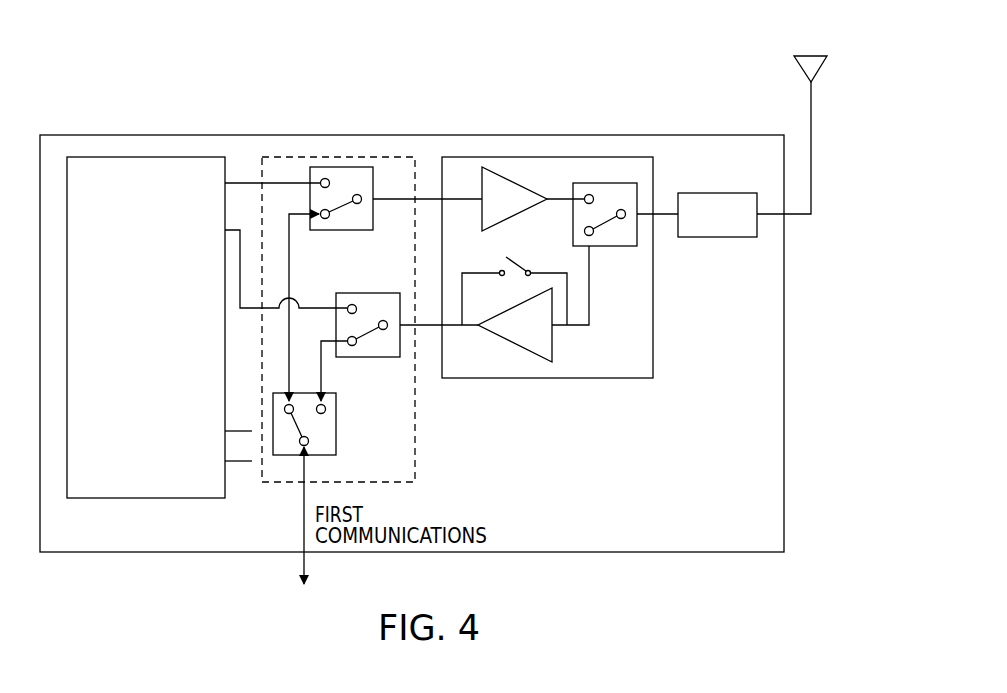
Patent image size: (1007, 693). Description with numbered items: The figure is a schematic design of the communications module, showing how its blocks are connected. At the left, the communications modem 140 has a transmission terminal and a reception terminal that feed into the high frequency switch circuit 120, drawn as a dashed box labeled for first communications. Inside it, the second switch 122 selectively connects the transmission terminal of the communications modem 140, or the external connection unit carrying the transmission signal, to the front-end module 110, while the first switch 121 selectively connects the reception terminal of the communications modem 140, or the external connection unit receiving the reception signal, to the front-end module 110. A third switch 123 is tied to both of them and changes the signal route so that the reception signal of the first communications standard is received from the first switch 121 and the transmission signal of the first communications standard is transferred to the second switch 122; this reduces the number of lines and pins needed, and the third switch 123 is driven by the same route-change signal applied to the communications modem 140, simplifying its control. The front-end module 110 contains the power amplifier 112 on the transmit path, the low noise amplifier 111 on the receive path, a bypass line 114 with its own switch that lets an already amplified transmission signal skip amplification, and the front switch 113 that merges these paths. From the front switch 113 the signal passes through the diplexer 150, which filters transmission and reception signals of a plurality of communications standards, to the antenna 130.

The front-end module 110 is at (630, 157).
The low noise amplifier 111 is at (518, 343).
The power amplifier 112 is at (501, 167).
The front switch 113 is at (605, 183).
The bypass line 114 is at (482, 271).
The high frequency switch circuit 120 is at (295, 157).
The first switch 121 is at (370, 357).
The second switch 122 is at (347, 167).
The third switch 123 is at (336, 443).
The antenna 130 is at (801, 54).
The communications modem 140 is at (184, 157).
The diplexer 150 is at (700, 193).